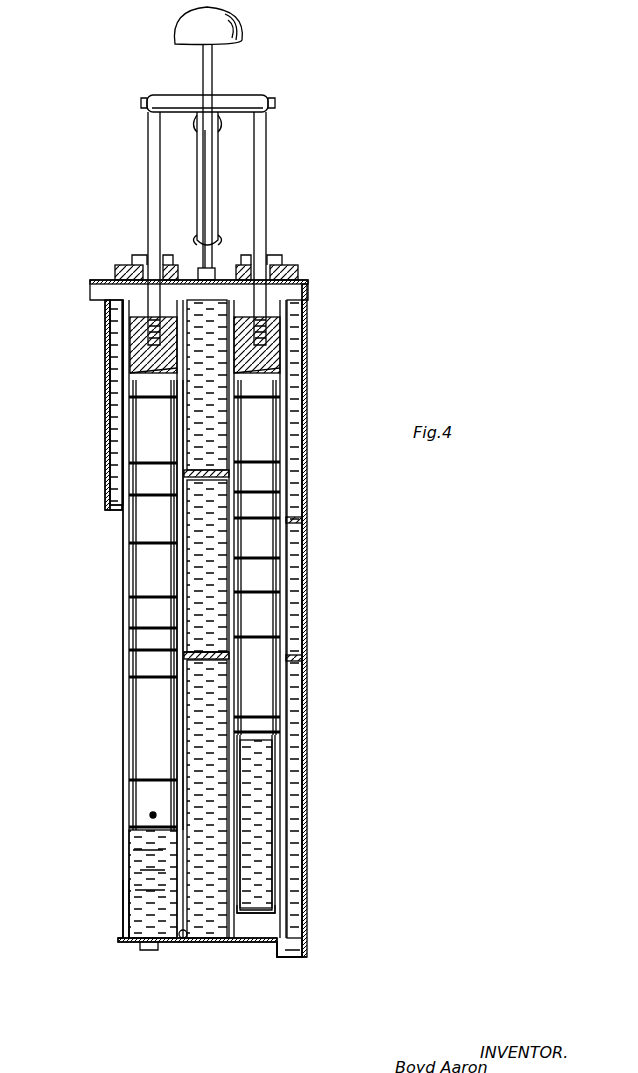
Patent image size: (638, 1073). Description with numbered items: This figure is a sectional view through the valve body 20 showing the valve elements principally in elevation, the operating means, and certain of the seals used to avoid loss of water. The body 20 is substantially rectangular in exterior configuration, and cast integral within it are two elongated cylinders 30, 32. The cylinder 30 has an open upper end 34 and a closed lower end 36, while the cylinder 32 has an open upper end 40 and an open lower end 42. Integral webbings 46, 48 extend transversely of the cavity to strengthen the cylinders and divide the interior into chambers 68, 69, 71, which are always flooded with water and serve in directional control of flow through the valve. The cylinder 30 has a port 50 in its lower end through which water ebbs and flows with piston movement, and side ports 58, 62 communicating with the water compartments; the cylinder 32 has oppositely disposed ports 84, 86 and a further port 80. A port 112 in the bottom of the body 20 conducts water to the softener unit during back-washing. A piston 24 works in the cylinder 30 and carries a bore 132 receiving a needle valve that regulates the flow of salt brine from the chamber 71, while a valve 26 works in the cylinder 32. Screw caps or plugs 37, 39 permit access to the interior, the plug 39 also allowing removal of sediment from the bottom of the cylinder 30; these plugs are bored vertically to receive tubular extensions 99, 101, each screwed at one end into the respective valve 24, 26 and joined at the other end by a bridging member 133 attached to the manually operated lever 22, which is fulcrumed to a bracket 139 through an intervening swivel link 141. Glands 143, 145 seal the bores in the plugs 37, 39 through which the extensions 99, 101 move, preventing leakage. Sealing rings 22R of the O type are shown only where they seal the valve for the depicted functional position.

The valve body 20 is at (308, 733).
The manually operated lever 22 is at (213, 72).
The piston rings 22R is at (282, 402).
The piston 24 is at (143, 601).
The valve 26 is at (262, 615).
The cylinder 30 is at (140, 868).
The cylinder 32 is at (285, 790).
The open upper end 34 is at (140, 312).
The closed lower end 36 is at (125, 925).
The screw cap 37 is at (115, 263).
The screw plug 39 is at (300, 268).
The open upper end 40 is at (285, 310).
The open lower end 42 is at (260, 908).
The integral webbing 46 is at (140, 460).
The integral webbing 48 is at (293, 660).
The port 50 is at (183, 938).
The port 58 is at (105, 505).
The port 62 is at (175, 563).
The chamber 68 is at (305, 345).
The chamber 69 is at (300, 520).
The chamber 71 is at (305, 822).
The port 80 is at (236, 656).
The port 84 is at (231, 497).
The port 86 is at (303, 480).
The tubular extension 99 is at (150, 172).
The tubular extension 101 is at (266, 172).
The port 112 is at (306, 955).
The bore 132 is at (150, 815).
The bridging member 133 is at (237, 123).
The bracket 139 is at (215, 258).
The swivel link 141 is at (197, 152).
The gland 143 is at (140, 258).
The gland 145 is at (270, 258).